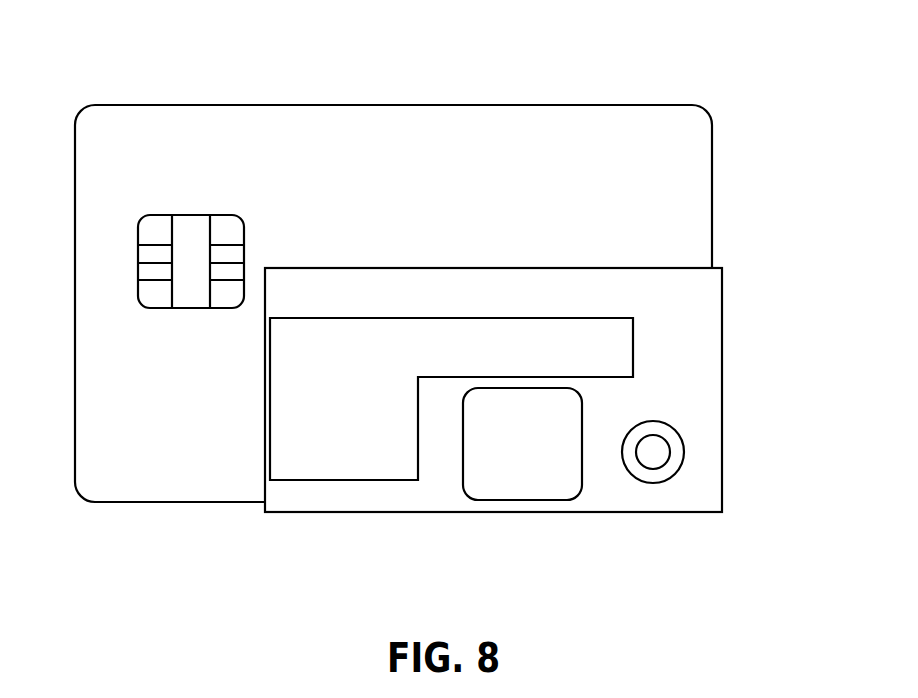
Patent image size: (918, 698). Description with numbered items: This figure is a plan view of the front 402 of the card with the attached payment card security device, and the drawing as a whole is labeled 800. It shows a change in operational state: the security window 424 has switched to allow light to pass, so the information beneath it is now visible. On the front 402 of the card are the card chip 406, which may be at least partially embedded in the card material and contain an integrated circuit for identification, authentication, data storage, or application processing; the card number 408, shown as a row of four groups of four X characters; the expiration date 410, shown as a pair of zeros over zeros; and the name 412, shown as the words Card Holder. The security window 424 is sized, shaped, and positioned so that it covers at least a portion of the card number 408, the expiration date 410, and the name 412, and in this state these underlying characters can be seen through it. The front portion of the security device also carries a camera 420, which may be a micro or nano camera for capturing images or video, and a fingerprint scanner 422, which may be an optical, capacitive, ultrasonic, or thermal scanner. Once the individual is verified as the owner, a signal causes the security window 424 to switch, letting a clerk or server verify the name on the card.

The credit card image 800 is at (108, 53).
The front 402 is at (690, 396).
The card chip 406 is at (203, 213).
The card number 408 is at (370, 330).
The expiration date 410 is at (291, 399).
The name 412 is at (232, 470).
The camera 420 is at (650, 483).
The fingerprint scanner 422 is at (497, 500).
The security window 424 is at (352, 483).